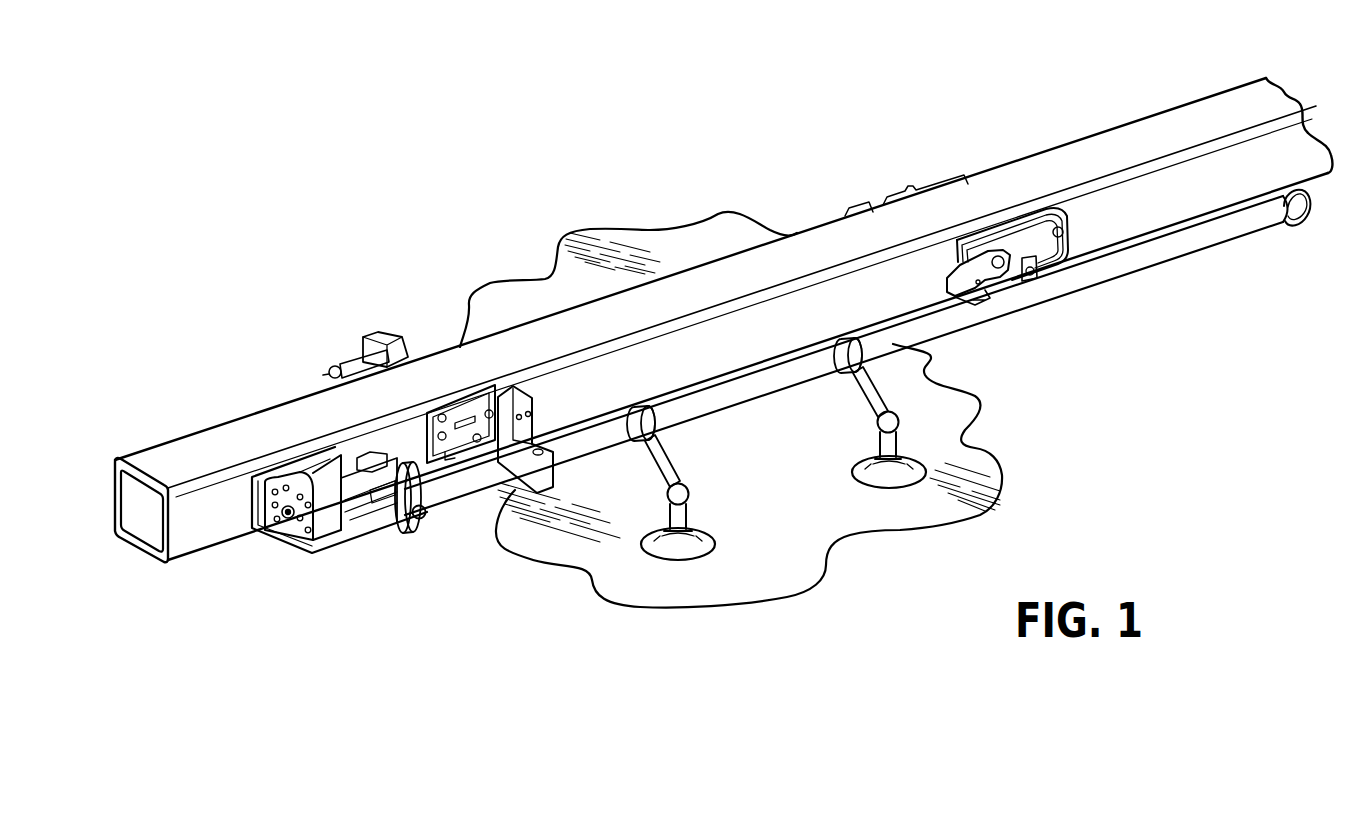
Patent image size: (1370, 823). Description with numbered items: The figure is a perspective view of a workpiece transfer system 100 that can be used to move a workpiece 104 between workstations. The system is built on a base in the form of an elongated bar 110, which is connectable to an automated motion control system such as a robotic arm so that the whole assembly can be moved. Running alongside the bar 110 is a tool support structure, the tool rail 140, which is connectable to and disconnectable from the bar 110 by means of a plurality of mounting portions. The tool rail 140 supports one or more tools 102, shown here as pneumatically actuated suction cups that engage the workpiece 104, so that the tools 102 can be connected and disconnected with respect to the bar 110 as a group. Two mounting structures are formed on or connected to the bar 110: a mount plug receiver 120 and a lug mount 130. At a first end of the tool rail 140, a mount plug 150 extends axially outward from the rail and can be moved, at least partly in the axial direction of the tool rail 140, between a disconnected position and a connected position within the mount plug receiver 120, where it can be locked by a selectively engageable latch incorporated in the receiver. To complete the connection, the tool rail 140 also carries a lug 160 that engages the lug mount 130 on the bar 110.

The workpiece transfer system 100 is at (393, 232).
The tools 102 is at (697, 548).
The workpiece 104 is at (968, 532).
The bar 110 is at (1001, 173).
The mount plug receiver 120 is at (372, 530).
The lug mount 130 is at (1066, 260).
The tool rail 140 is at (1235, 236).
The mount plug 150 is at (423, 513).
The lug 160 is at (992, 287).